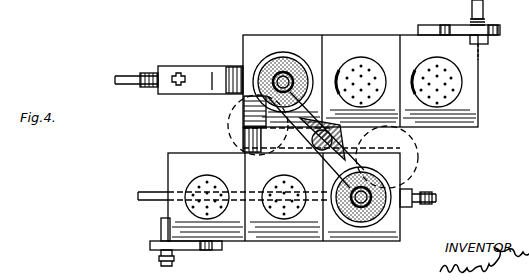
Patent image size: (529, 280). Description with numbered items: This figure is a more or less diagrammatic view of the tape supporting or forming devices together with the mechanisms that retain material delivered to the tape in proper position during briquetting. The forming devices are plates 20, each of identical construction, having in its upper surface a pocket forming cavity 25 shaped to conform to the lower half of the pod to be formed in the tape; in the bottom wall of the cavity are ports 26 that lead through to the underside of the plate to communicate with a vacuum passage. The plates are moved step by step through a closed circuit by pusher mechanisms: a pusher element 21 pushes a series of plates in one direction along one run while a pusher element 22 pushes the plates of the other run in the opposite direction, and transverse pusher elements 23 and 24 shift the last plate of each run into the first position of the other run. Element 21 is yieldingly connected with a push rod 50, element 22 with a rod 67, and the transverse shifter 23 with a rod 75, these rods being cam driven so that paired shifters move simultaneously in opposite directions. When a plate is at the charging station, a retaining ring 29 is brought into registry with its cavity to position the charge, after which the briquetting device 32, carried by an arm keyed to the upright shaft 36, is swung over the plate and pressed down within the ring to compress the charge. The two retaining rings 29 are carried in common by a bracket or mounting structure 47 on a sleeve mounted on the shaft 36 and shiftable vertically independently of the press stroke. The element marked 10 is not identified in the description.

The stem 10 is at (485, 6).
The tape supporting plate 20 is at (485, 101).
The pusher element 21 is at (406, 194).
The pusher element 22 is at (237, 66).
The pusher element 23 is at (210, 250).
The pusher element 24 is at (437, 27).
The pocket forming cavity 25 is at (374, 60).
The ports 26 is at (344, 64).
The retaining ring 29 is at (279, 53).
The briquetting device 32 is at (228, 125).
The upright shaft 36 is at (292, 150).
The bracket or mounting structure 47 is at (324, 152).
The push rod 50 is at (140, 196).
The rod 67 is at (136, 72).
The rod 75 is at (161, 222).